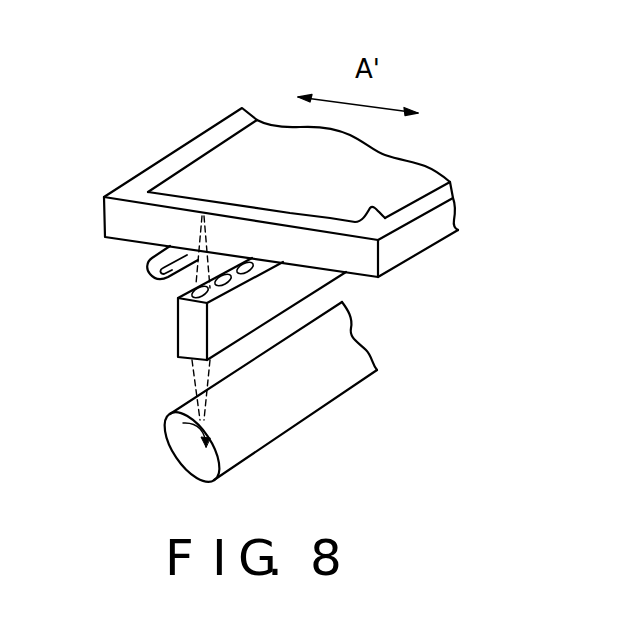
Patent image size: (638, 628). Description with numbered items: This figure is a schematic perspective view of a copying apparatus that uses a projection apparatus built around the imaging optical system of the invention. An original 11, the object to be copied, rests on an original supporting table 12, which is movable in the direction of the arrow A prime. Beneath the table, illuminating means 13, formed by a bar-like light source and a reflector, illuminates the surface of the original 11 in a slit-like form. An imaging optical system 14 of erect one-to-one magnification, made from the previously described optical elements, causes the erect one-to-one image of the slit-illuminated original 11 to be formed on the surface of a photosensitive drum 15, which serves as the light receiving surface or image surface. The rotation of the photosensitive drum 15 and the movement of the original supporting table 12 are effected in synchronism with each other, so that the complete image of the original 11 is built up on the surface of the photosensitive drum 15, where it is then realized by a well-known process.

The original 11 is at (415, 168).
The original supporting table 12 is at (172, 165).
The illuminating means 13 is at (152, 272).
The imaging optical system 14 is at (177, 335).
The photosensitive drum 15 is at (303, 405).